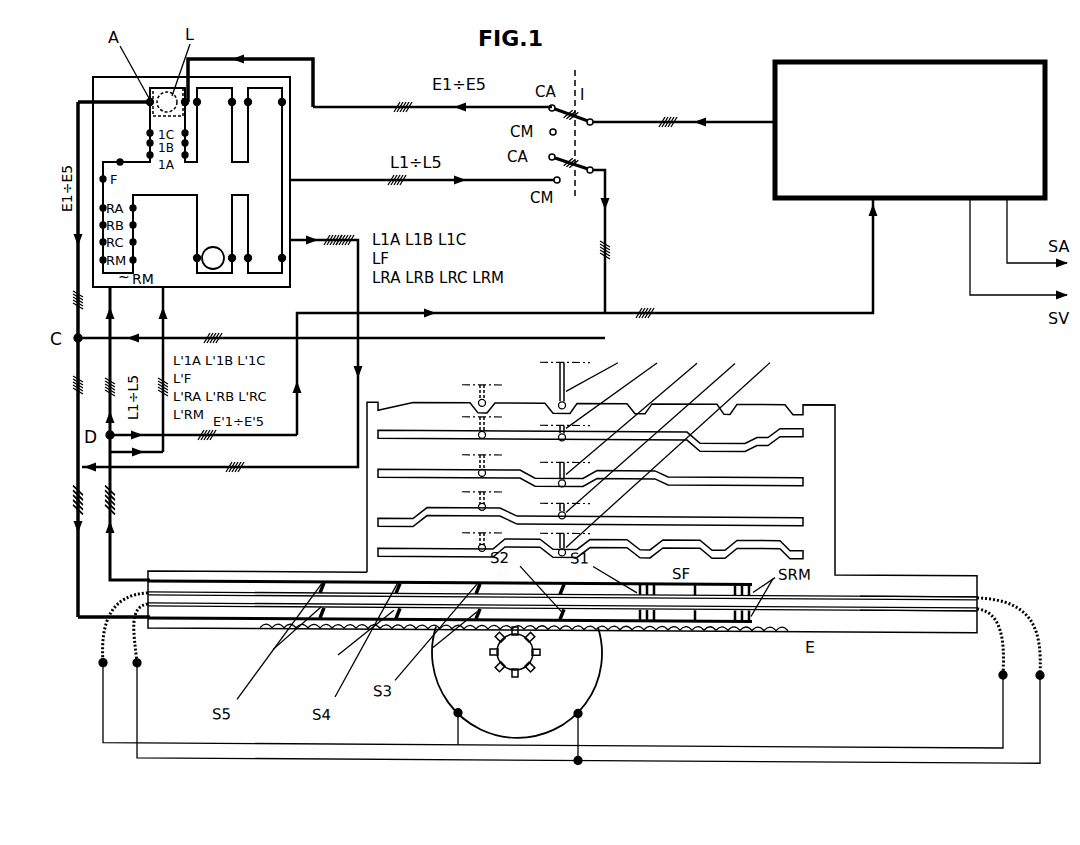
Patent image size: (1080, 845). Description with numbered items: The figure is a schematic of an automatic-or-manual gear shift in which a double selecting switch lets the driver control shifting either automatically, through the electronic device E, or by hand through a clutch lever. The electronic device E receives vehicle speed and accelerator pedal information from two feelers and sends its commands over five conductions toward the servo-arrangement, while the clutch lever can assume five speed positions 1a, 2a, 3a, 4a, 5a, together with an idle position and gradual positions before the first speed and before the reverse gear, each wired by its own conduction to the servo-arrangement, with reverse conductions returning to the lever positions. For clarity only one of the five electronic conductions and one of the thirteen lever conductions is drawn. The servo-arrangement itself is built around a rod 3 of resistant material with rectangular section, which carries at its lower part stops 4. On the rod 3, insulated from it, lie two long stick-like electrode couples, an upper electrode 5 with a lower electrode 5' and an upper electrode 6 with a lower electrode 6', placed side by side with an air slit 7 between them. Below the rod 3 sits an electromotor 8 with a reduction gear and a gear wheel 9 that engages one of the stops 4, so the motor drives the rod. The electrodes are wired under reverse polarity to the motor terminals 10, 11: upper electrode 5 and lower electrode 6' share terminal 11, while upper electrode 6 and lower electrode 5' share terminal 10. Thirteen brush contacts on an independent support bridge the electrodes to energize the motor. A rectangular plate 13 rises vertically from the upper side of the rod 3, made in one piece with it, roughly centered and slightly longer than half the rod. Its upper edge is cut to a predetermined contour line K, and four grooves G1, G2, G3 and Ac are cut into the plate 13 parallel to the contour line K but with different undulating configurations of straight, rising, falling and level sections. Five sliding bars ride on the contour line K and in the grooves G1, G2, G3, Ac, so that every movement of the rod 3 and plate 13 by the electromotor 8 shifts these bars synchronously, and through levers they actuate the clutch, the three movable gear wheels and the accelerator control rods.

The clutch lever position of the first speed 1a is at (160, 86).
The clutch lever position of the second speed 2a is at (220, 277).
The clutch lever position of the third speed 3a is at (224, 85).
The clutch lever position of the fourth speed 4a is at (272, 278).
The clutch lever position of the fifth speed 5a is at (279, 85).
The rod 3 is at (930, 579).
The stops 4 is at (367, 623).
The upper electrode of first electrode couple 5 is at (562, 568).
The lower electrode of first electrode couple 5' is at (562, 640).
The upper electrode of second electrode couple 6 is at (918, 574).
The lower electrode of second electrode couple 6' is at (918, 637).
The air slit 7 is at (600, 623).
The electromotor 8 is at (517, 683).
The gear wheel 9 is at (515, 652).
The terminal of the electromotor 10 is at (590, 736).
The terminal of the electromotor 11 is at (447, 727).
The rectangular plate 13 is at (706, 451).
The electronic device E is at (910, 130).
The contour line K is at (795, 407).
The shaped groove G1 is at (805, 430).
The shaped groove G2 is at (805, 475).
The shaped groove G3 is at (805, 515).
The shaped groove Ac is at (805, 550).